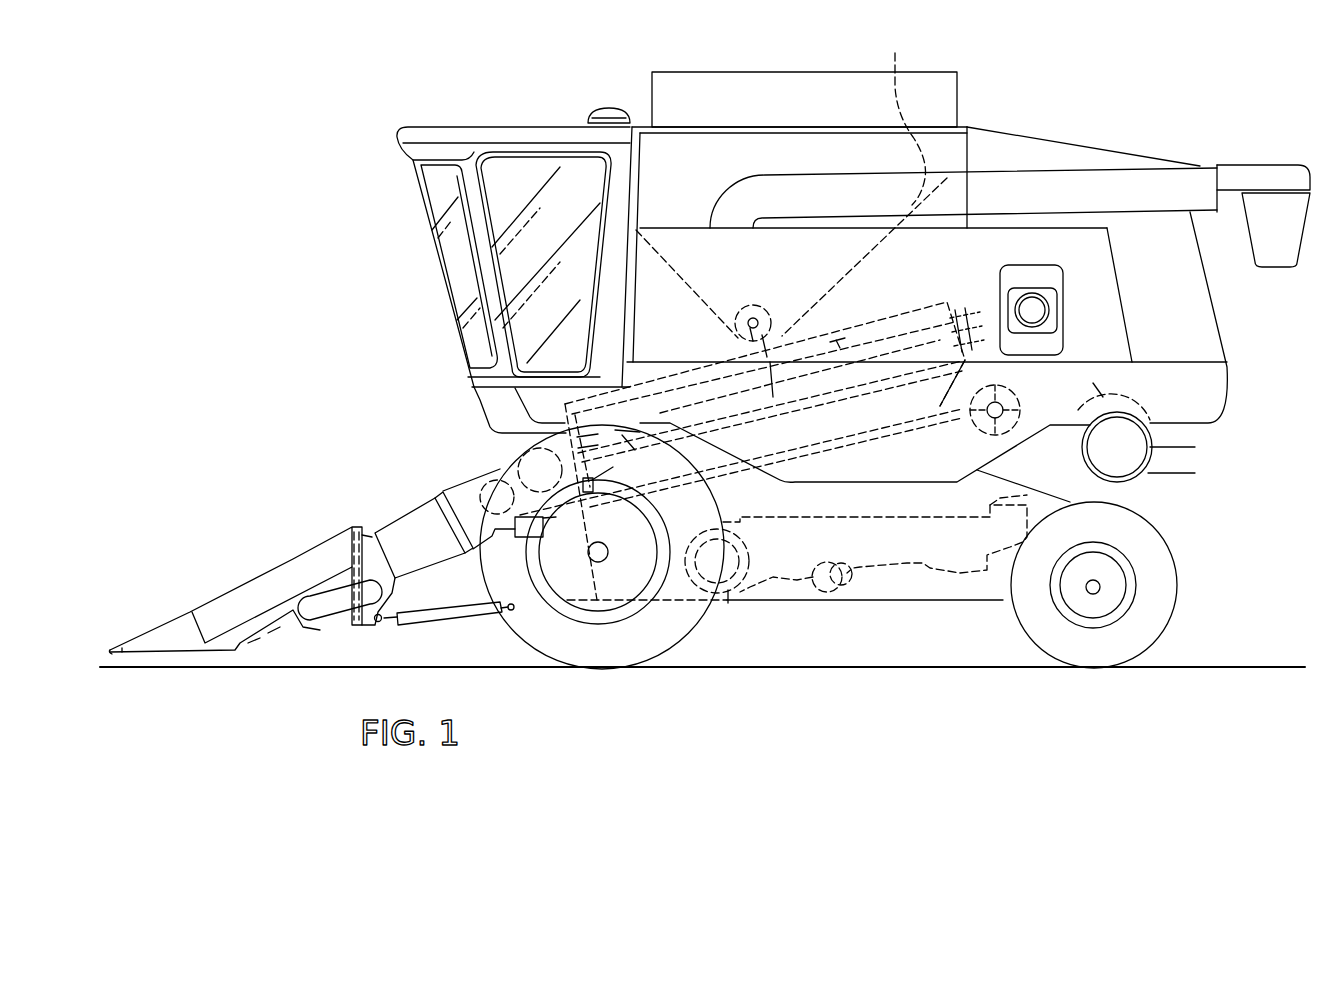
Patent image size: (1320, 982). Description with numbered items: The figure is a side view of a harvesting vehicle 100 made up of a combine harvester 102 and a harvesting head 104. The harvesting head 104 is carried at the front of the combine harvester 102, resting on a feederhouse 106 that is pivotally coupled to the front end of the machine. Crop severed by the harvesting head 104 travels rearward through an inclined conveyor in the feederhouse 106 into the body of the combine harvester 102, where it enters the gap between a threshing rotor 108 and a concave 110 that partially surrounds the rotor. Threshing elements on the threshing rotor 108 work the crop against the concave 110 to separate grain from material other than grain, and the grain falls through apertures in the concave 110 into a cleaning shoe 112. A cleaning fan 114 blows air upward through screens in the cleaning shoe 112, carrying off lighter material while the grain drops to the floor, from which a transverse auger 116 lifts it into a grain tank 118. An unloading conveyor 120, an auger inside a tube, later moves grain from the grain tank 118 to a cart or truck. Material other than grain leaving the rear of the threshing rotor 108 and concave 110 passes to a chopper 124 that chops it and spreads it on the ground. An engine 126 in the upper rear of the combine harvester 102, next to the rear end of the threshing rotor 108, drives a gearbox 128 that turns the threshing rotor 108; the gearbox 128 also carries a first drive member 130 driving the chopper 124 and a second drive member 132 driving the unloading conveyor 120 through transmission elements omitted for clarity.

The harvesting vehicle 100 is at (288, 133).
The combine harvester 102 is at (508, 124).
The harvesting head 104 is at (316, 553).
The feederhouse 106 is at (415, 511).
The threshing rotor 108 is at (897, 314).
The concave 110 is at (866, 330).
The cleaning shoe 112 is at (1045, 490).
The cleaning fan 114 is at (728, 603).
The transverse auger 116 is at (868, 578).
The grain tank 118 is at (804, 76).
The unloading conveyor 120 is at (1073, 170).
The chopper 124 is at (1150, 473).
The engine 126 is at (1030, 262).
The gearbox 128 is at (1037, 290).
The first drive member 130 is at (1045, 335).
The second drive member 132 is at (1042, 322).